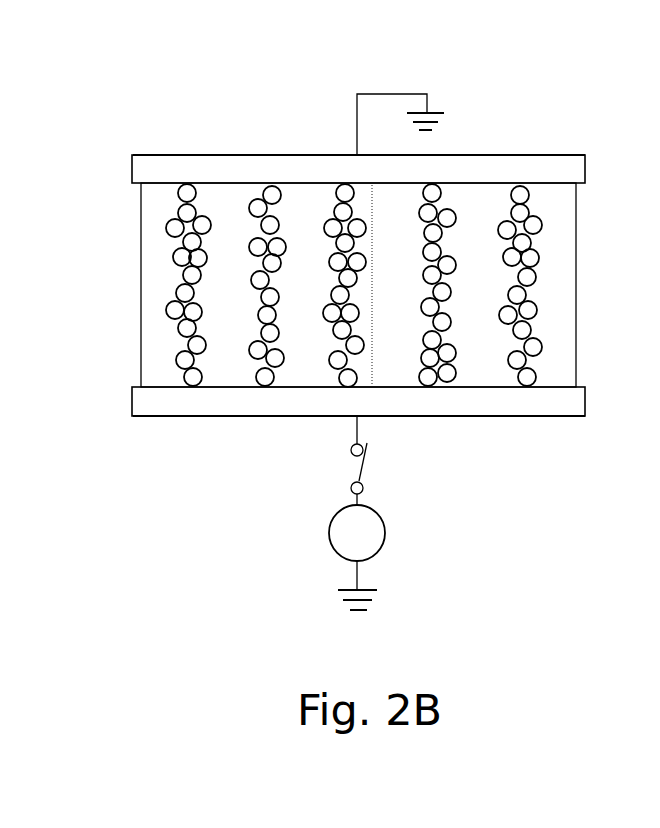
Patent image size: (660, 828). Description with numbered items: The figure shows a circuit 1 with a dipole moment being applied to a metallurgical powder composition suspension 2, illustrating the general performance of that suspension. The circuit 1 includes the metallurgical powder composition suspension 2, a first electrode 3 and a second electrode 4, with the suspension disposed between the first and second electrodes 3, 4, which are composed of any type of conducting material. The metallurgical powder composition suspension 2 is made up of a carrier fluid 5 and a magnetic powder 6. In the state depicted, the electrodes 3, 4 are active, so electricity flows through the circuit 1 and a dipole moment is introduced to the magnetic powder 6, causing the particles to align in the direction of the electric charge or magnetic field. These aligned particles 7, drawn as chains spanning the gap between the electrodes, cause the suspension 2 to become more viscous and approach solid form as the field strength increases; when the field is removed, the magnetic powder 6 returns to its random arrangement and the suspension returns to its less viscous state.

The circuit 1 is at (597, 129).
The metallurgical powder composition suspension 2 is at (228, 198).
The first electrode 3 is at (318, 172).
The second electrode 4 is at (228, 402).
The carrier fluid 5 is at (157, 333).
The magnetic powder 6 is at (522, 195).
The aligned particles 7 is at (447, 198).